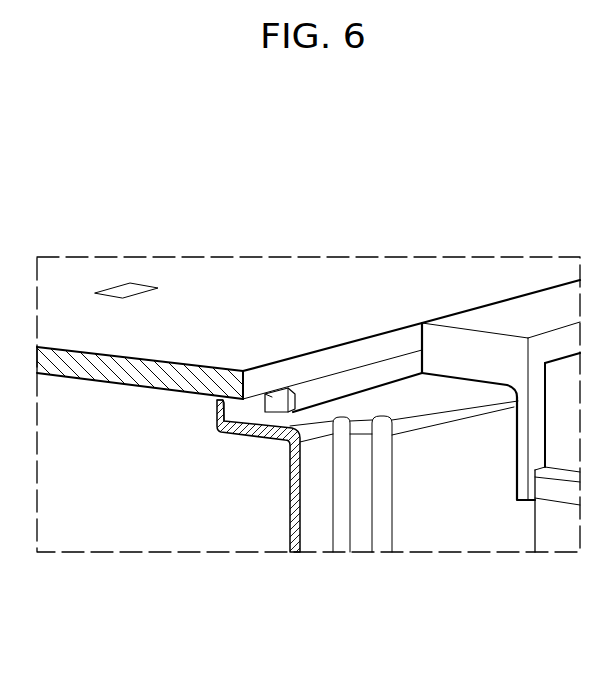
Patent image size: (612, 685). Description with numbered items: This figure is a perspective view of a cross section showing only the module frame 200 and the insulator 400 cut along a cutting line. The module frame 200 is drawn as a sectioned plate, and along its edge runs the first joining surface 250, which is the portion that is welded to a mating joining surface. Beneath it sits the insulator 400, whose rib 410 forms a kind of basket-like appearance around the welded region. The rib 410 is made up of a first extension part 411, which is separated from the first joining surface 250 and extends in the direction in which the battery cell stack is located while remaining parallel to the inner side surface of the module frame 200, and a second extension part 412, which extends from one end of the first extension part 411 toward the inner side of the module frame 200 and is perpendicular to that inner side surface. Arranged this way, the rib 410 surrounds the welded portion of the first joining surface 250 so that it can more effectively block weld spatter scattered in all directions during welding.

The module frame 200 is at (236, 292).
The first joining surface 250 is at (362, 357).
The insulator 400 is at (403, 398).
The rib 410 is at (277, 611).
The first extension part 411 is at (272, 433).
The second extension part 412 is at (262, 406).